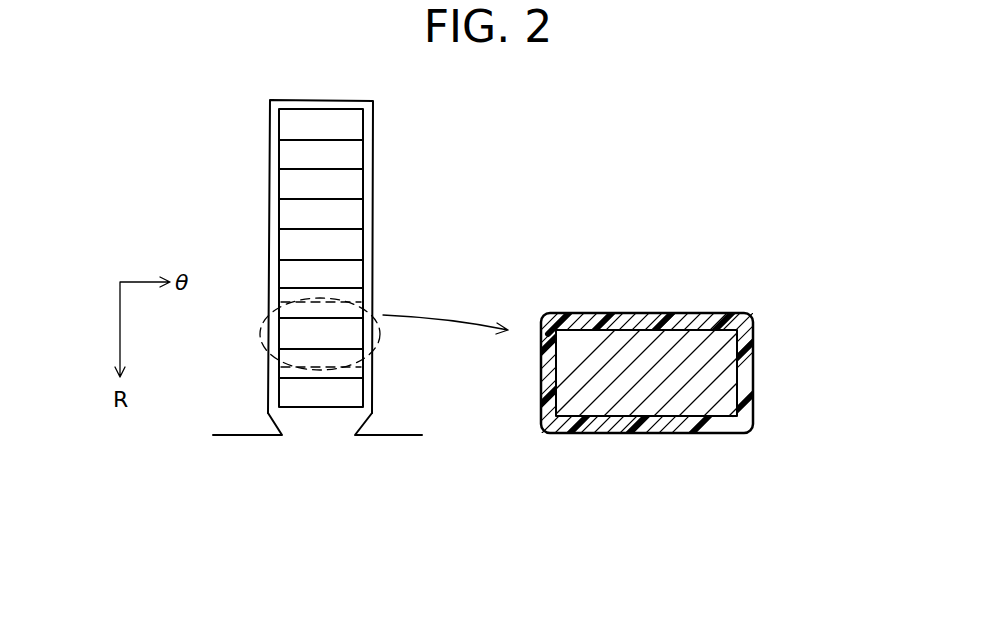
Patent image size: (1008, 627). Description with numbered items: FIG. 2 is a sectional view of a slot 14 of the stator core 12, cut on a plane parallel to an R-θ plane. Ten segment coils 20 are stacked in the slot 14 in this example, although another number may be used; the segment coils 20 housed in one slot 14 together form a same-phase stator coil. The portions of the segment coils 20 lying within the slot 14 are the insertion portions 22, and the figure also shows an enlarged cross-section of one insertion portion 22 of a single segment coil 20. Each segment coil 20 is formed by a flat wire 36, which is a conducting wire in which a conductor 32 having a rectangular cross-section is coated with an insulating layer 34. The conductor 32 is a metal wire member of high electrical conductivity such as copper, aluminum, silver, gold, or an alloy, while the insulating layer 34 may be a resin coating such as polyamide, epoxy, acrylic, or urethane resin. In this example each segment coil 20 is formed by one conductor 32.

The stator core 12 is at (410, 423).
The slot 14 is at (282, 425).
The segment coil 20 is at (271, 272).
The insertion portion 22 is at (639, 432).
The conductor 32 is at (680, 342).
The insulating layer 34 is at (757, 352).
The flat wire 36 is at (639, 432).